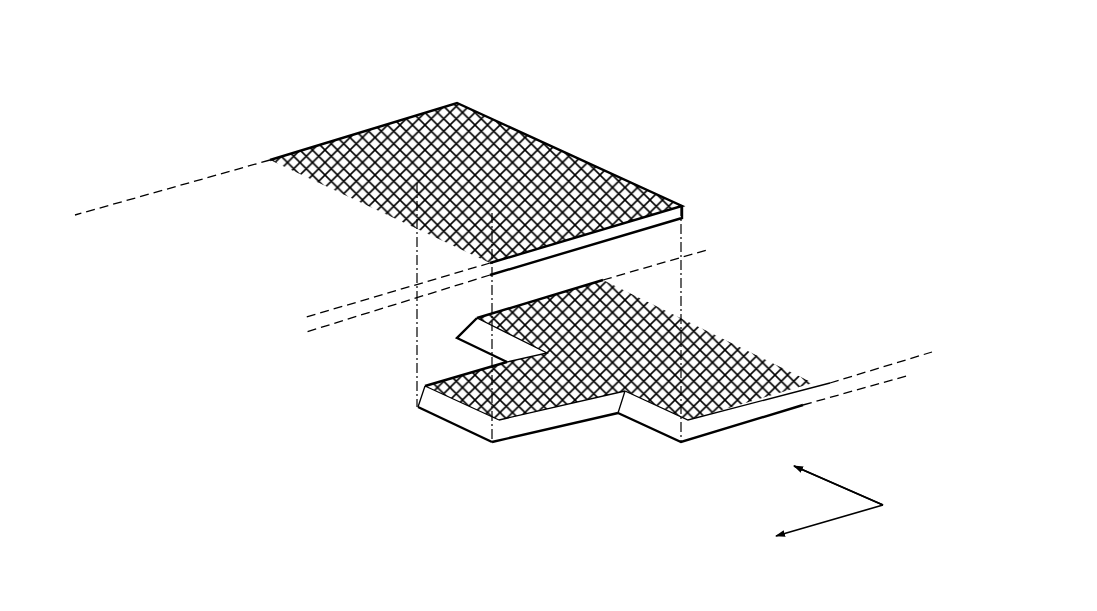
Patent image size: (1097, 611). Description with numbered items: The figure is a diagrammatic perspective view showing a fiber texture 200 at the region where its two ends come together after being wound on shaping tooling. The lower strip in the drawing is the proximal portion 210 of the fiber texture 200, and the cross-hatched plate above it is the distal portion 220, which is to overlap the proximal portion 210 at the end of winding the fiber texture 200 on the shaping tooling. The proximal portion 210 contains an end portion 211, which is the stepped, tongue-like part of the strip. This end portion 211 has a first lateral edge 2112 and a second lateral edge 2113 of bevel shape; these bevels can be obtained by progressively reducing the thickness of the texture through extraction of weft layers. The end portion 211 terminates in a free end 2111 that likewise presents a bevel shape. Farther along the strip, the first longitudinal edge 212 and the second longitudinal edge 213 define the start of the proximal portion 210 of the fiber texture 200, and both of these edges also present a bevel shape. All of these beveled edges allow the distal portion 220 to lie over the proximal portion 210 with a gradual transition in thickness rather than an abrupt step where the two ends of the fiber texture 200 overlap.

The fiber texture 200 is at (771, 87).
The proximal portion 210 is at (639, 347).
The end portion 211 is at (486, 415).
The free end 2111 is at (472, 427).
The first lateral edge 2112 is at (542, 423).
The second lateral edge 2113 is at (453, 377).
The first longitudinal edge 212 is at (673, 420).
The second longitudinal edge 213 is at (472, 336).
The distal portion 220 is at (411, 107).